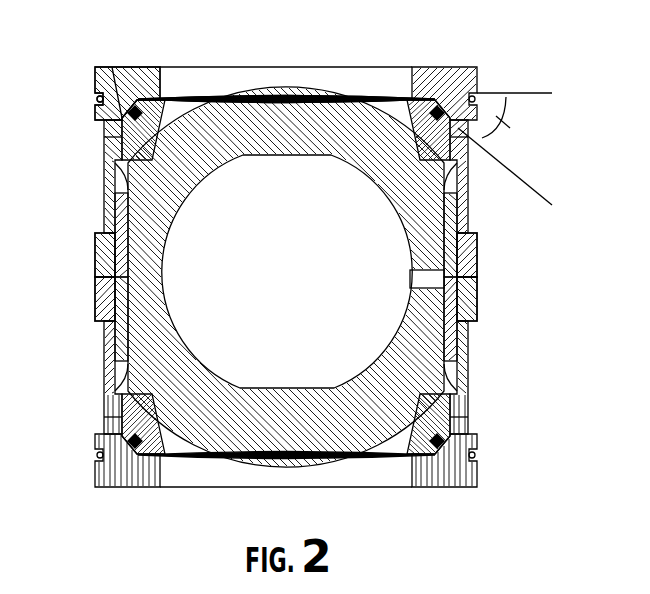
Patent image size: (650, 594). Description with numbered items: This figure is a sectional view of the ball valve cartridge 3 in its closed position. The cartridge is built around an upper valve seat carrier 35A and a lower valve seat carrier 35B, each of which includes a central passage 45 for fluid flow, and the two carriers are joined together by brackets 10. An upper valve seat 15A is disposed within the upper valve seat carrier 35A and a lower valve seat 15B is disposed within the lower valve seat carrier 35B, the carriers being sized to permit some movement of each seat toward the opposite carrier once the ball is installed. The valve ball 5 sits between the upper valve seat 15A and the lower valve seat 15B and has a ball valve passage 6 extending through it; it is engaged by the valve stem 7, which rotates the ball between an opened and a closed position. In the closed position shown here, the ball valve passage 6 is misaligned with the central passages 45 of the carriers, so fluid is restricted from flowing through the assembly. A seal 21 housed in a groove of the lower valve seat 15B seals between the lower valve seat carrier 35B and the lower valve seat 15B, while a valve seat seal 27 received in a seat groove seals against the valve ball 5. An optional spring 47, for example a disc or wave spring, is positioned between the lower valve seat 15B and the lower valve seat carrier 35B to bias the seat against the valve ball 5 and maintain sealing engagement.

The ball valve cartridge 3 is at (92, 147).
The valve ball 5 is at (290, 130).
The ball valve passage 6 is at (294, 280).
The valve stem 7 is at (95, 305).
The brackets 10 is at (103, 186).
The upper valve seat 15A is at (400, 110).
The lower valve seat 15B is at (156, 445).
The seal 21 is at (113, 68).
The valve seat seal 27 is at (165, 98).
The upper valve seat carrier 35A is at (152, 58).
The lower valve seat carrier 35B is at (426, 497).
The central passage 45 is at (364, 90).
The spring 47 is at (372, 93).